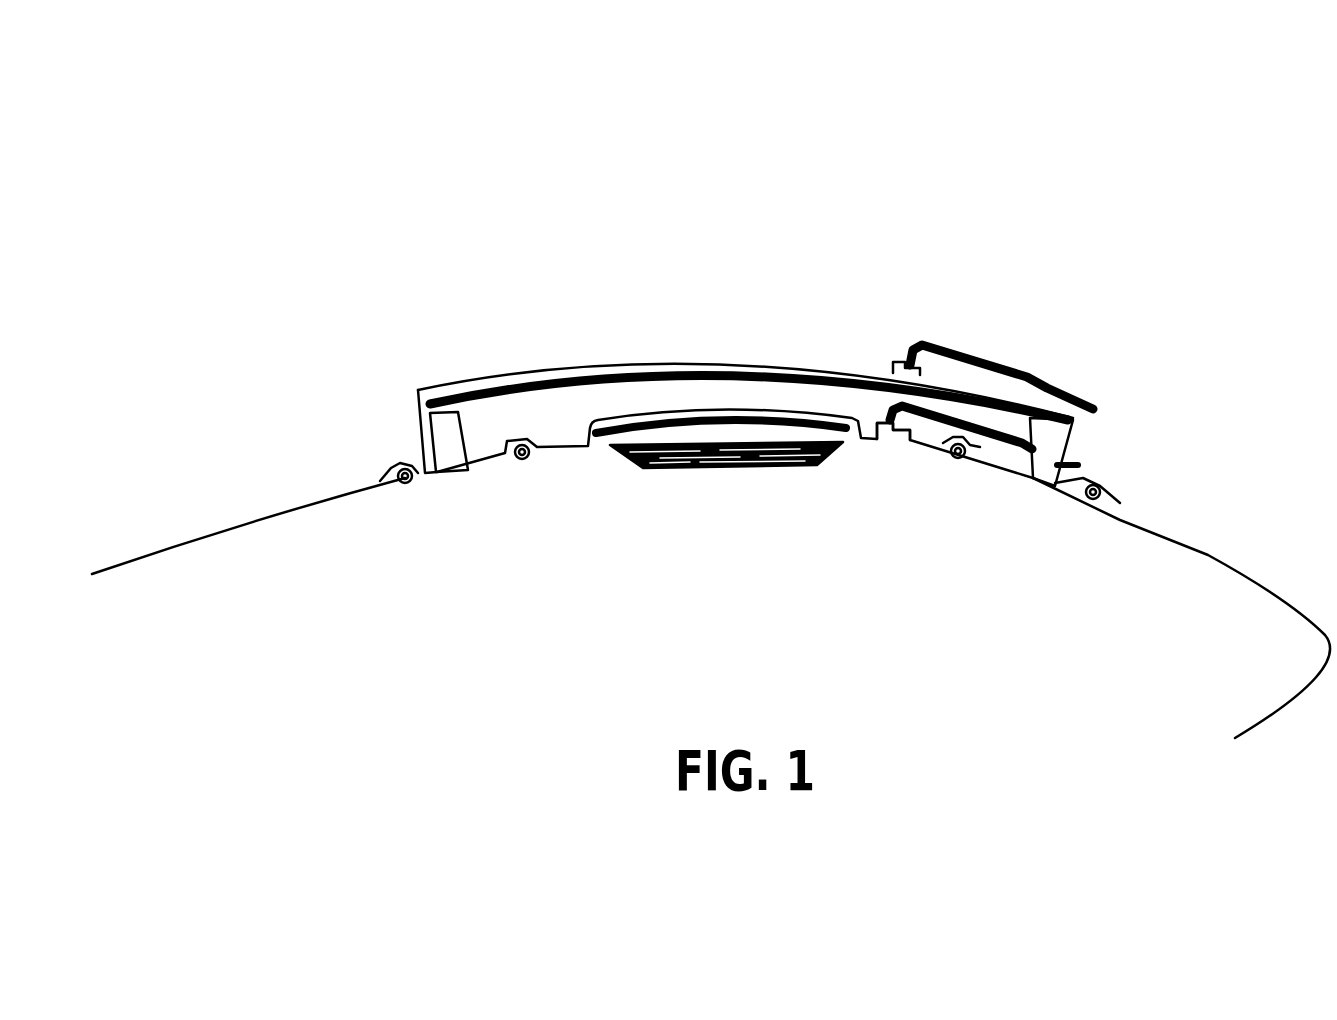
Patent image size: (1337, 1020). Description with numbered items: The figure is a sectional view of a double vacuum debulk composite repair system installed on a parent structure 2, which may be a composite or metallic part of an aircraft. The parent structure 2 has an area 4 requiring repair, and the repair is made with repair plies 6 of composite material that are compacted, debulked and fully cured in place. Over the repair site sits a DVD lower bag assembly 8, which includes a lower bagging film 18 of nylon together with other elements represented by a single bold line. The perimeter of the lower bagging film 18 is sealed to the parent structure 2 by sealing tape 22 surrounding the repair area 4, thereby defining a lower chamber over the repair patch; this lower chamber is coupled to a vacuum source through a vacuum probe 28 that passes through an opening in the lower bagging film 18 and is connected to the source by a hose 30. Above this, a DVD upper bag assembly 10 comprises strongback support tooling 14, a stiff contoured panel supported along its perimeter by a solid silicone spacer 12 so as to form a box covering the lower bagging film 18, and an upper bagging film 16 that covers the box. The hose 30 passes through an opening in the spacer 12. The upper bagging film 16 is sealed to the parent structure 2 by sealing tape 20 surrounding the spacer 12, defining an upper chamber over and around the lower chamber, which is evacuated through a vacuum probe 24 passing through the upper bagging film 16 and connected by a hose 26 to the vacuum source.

The parent structure 2 is at (1208, 554).
The area requiring repair 4 is at (640, 474).
The repair plies 6 is at (693, 466).
The DVD lower bag assembly 8 is at (660, 416).
The DVD upper bag assembly 10 is at (430, 381).
The spacer 12 is at (448, 455).
The strongback support tooling 14 is at (768, 372).
The upper bagging film 16 is at (655, 372).
The lower bagging film 18 is at (712, 410).
The sealing tape 20 is at (404, 490).
The sealing tape 22 is at (518, 462).
The vacuum probe 24 is at (897, 362).
The seal strip 26 is at (1018, 373).
The vacuum probe 28 is at (897, 442).
The hose 30 is at (1000, 440).